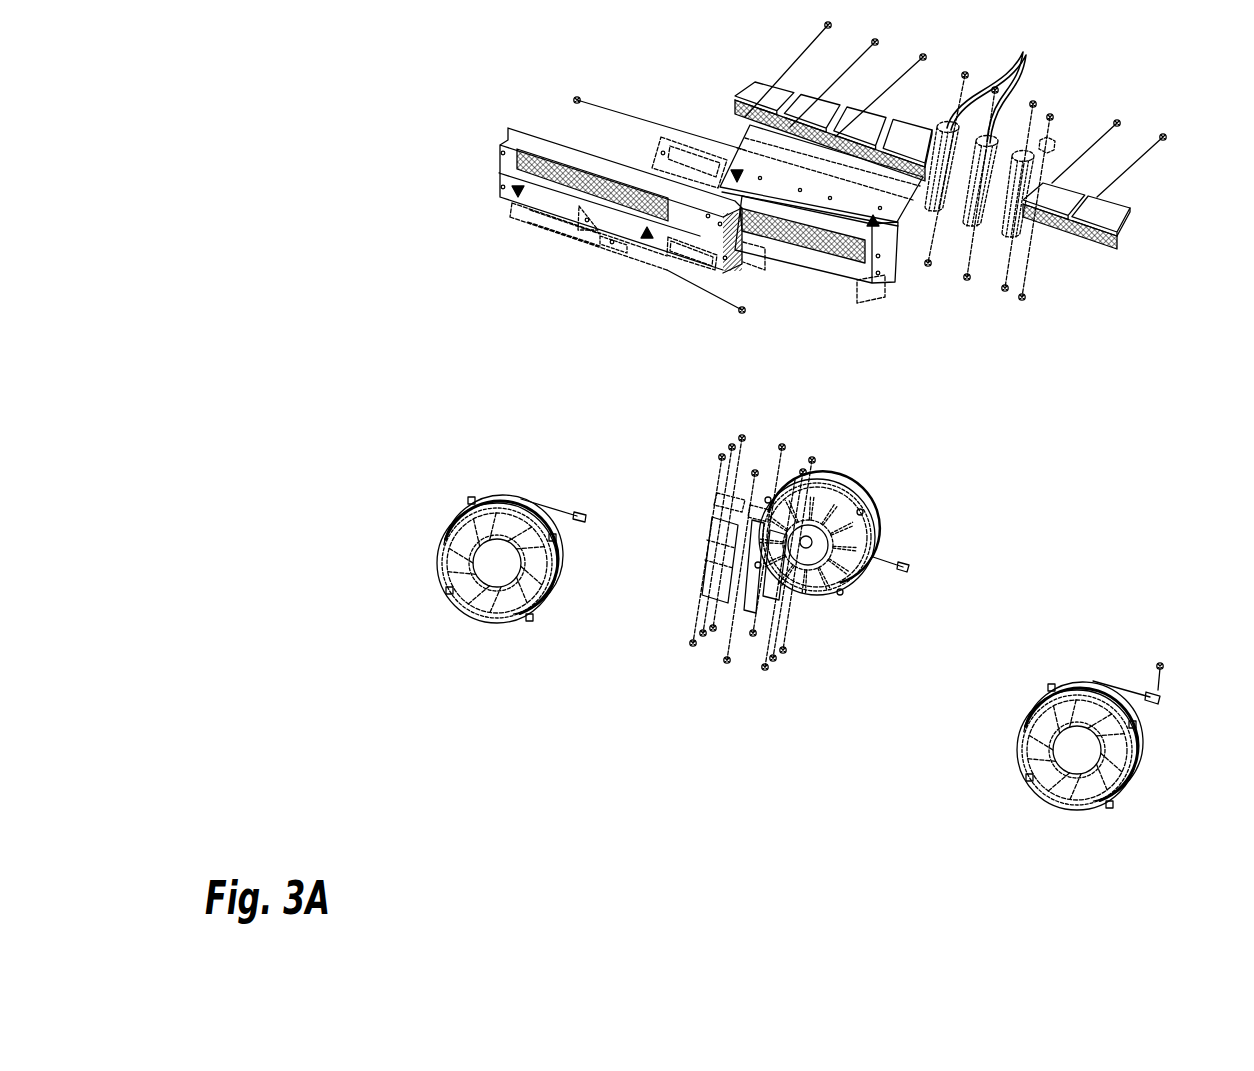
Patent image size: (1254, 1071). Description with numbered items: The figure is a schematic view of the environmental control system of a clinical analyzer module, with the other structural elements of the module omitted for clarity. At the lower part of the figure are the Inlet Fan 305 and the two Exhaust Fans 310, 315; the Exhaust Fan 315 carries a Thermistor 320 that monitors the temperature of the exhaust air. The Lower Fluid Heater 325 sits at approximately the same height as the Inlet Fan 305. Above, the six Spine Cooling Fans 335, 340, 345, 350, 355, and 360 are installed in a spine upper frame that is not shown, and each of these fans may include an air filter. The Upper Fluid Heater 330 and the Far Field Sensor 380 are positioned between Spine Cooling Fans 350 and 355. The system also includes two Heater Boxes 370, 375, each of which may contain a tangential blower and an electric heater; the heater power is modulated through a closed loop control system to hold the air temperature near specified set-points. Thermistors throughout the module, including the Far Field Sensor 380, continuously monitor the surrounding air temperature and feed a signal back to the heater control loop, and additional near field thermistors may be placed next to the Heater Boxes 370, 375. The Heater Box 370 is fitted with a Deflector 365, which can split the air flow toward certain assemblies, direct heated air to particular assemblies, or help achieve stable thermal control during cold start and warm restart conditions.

The Inlet Fan 305 is at (858, 508).
The Exhaust Fan 310 is at (563, 558).
The Exhaust Fan 315 is at (1143, 740).
The Thermistor 320 is at (1162, 683).
The Lower Fluid Heater 325 is at (700, 537).
The Upper Fluid Heater 330 is at (984, 159).
The Spine Cooling Fan 335 is at (749, 98).
The Spine Cooling Fan 340 is at (816, 120).
The Spine Cooling Fan 345 is at (853, 136).
The Spine Cooling Fan 350 is at (905, 139).
The Spine Cooling Fan 355 is at (1062, 193).
The Spine Cooling Fan 360 is at (1112, 210).
The Deflector 365 is at (530, 218).
The Heater Box 370 is at (503, 150).
The Heater Box 375 is at (845, 272).
The Far Field Sensor 380 is at (1047, 138).